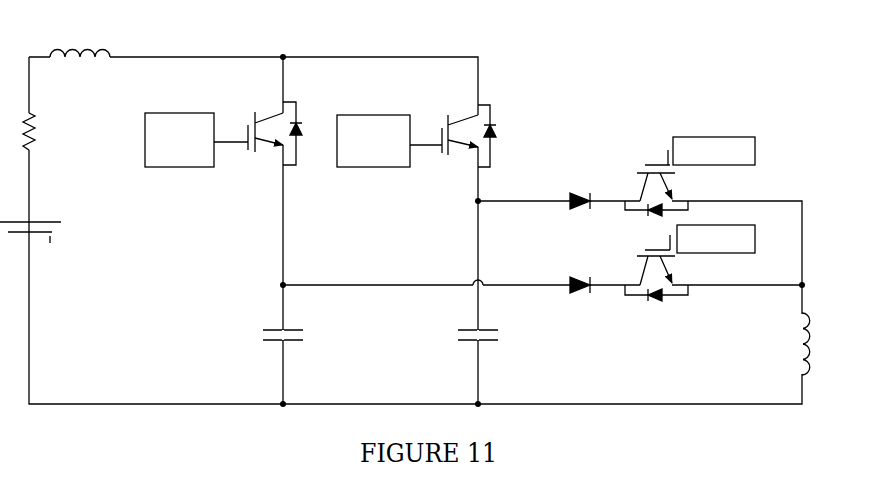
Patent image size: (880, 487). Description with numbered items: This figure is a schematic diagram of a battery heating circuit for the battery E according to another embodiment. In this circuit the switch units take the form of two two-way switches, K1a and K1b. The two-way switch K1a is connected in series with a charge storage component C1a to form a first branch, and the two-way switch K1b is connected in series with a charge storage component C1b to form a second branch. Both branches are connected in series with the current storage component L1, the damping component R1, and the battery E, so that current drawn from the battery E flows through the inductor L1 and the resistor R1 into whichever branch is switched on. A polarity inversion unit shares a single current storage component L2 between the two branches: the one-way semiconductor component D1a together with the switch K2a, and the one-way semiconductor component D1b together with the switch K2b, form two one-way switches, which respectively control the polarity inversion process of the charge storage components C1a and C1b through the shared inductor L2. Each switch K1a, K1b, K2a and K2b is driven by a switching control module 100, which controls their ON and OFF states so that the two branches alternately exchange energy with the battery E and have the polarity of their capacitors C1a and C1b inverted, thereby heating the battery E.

The current storage component L1 is at (80, 69).
The damping component R1 is at (45, 134).
The battery E is at (44, 258).
The switching control module 100 is at (200, 152).
The two-way switch K1a is at (258, 126).
The two-way switch K1b is at (453, 127).
The one-way semiconductor component D1a is at (558, 275).
The one-way semiconductor component D1b is at (558, 191).
The switch K2a is at (680, 268).
The switch K2b is at (676, 183).
The charge storage component C1a is at (260, 334).
The charge storage component C1b is at (454, 334).
The current storage component L2 is at (824, 344).